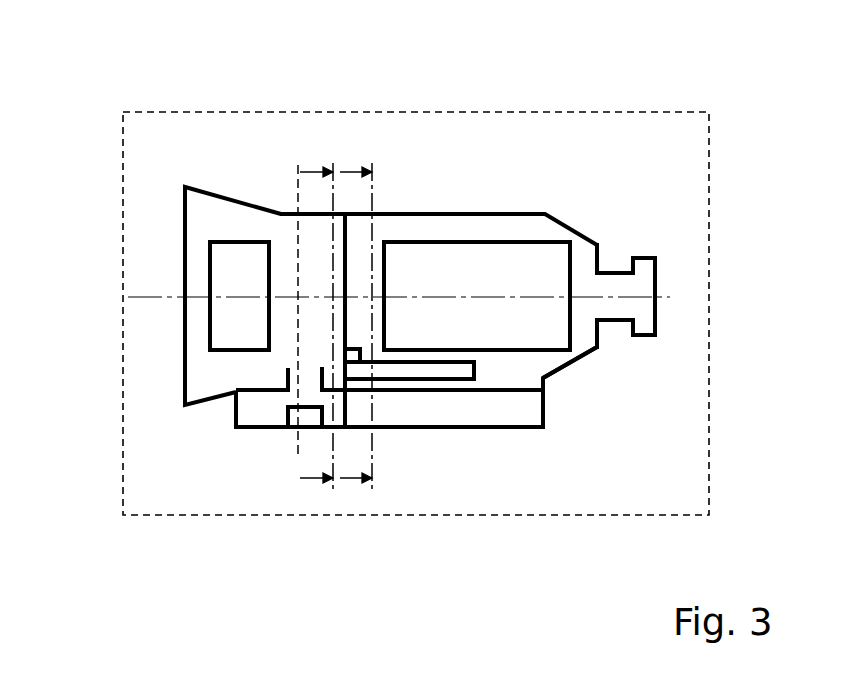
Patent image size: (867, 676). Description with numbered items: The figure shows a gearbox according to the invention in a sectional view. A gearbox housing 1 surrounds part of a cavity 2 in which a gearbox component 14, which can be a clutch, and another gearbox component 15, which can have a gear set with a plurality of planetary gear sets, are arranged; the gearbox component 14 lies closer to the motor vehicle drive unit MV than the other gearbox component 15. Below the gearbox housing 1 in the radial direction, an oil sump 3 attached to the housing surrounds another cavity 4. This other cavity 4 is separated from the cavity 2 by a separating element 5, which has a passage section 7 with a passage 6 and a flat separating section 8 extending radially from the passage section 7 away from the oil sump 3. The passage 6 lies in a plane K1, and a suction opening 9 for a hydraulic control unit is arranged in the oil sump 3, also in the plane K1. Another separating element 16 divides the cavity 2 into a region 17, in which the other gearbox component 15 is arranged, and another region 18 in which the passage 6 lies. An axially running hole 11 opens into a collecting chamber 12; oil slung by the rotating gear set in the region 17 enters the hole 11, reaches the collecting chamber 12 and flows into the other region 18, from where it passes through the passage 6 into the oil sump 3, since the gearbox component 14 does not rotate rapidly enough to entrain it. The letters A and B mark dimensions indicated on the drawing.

The gearbox housing 1 is at (560, 218).
The cavity 2 is at (577, 252).
The oil sump 3 is at (543, 413).
The other cavity 4 is at (514, 408).
The separating element 5 is at (454, 391).
The passage 6 is at (290, 380).
The passage section 7 is at (310, 382).
The separating section 8 is at (508, 388).
The suction opening 9 is at (293, 415).
The hole 11 is at (392, 370).
The collecting chamber 12 is at (355, 355).
The gearbox component 14 is at (233, 323).
The other gearbox component 15 is at (492, 267).
The other separating element 16 is at (343, 227).
The region 17 is at (442, 232).
The other region 18 is at (208, 207).
The plane K1 is at (297, 193).
The motor vehicle drive unit MV is at (160, 110).
The distance A is at (356, 327).
The distance B is at (316, 327).